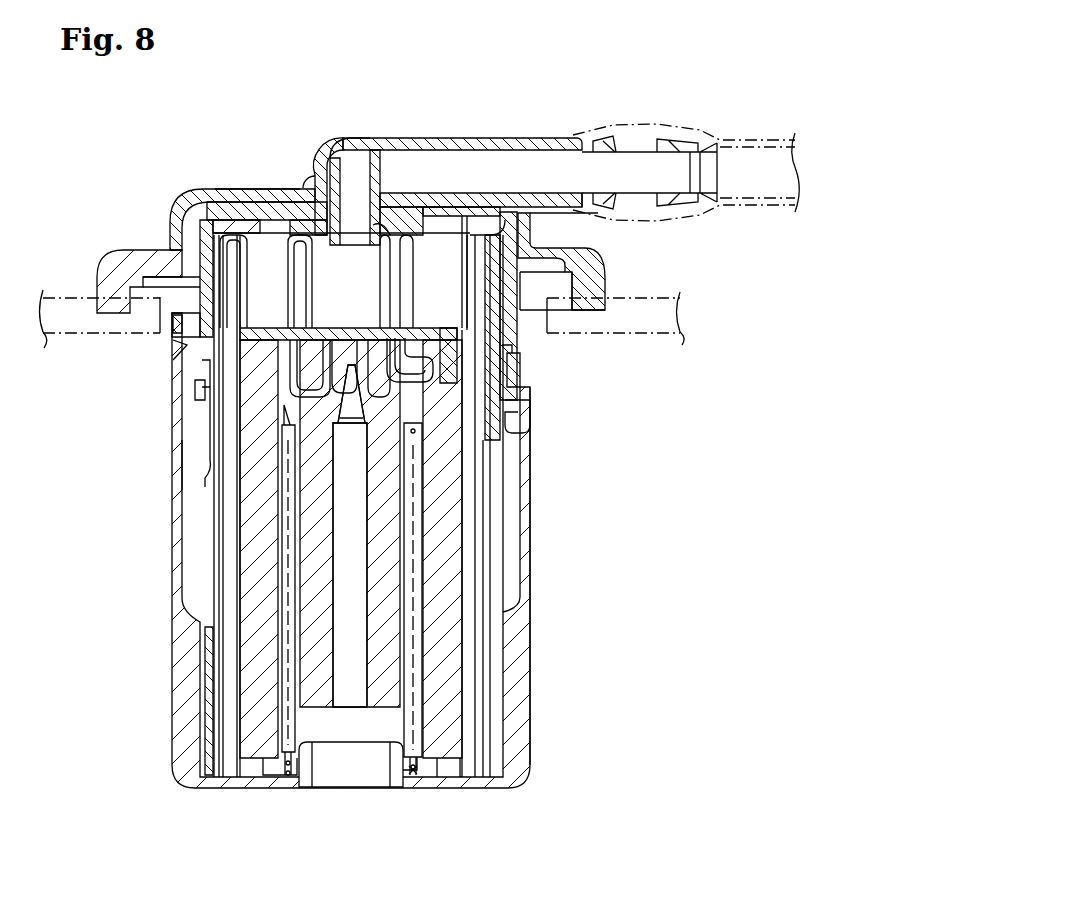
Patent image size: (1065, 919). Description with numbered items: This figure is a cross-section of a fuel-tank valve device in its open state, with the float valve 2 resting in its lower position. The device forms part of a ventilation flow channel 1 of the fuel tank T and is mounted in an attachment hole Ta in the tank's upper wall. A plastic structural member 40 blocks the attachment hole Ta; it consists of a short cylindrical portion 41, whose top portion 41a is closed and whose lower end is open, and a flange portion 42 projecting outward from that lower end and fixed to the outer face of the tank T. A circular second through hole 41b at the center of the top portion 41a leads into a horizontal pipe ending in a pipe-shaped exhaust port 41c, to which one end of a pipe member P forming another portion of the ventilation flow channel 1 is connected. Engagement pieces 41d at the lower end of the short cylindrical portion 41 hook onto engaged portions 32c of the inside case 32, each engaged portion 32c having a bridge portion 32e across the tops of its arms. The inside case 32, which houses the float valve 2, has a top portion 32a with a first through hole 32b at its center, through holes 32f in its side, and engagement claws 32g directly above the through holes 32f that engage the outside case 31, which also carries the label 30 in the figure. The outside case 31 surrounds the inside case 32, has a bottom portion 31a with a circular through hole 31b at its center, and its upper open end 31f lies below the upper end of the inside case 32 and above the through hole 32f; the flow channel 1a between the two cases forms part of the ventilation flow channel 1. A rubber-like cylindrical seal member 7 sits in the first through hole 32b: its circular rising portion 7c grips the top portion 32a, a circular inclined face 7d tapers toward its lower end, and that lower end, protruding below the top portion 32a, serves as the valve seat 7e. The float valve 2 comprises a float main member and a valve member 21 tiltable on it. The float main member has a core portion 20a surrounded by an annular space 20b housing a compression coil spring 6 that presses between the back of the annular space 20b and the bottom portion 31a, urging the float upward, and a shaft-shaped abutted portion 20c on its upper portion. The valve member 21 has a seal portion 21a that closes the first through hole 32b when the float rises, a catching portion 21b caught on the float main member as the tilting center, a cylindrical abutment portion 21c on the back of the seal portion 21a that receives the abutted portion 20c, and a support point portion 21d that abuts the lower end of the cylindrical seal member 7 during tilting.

The ventilation flow channel 1 is at (507, 173).
The flow channel 1a is at (195, 465).
The float valve 2 is at (452, 555).
The compression coil spring 6 is at (413, 673).
The cylindrical seal member 7 is at (355, 235).
The circular rising portion 7c is at (307, 197).
The circular inclined face 7d is at (397, 240).
The valve seat 7e is at (367, 230).
The core portion 20a is at (400, 602).
The annular space 20b is at (418, 647).
The abutted portion 20c is at (330, 370).
The valve member 21 is at (347, 327).
The seal portion 21a is at (343, 272).
The catching portion 21b is at (448, 327).
The abutment portion 21c is at (383, 385).
The support point portion 21d is at (300, 340).
The housing 30 is at (530, 533).
The outside case 31 is at (351, 511).
The bottom portion 31a is at (410, 788).
The circular through hole 31b is at (355, 762).
The upper open end 31f is at (195, 388).
The inside case 32 is at (207, 203).
The top portion 32a is at (247, 227).
The first through hole 32b is at (403, 207).
The engaged portion 32c is at (522, 375).
The bridge portion 32e is at (507, 349).
The through hole 32f is at (207, 475).
The engagement claw 32g is at (173, 340).
The structural member 40 is at (175, 203).
The short cylindrical portion 41 is at (175, 230).
The top portion 41a is at (270, 187).
The second through hole 41b is at (338, 240).
The exhaust port 41c is at (630, 168).
The engagement piece 41d is at (513, 413).
The flange portion 42 is at (593, 283).
The pipe member P is at (822, 186).
The fuel tank T is at (700, 324).
The attachment hole Ta is at (532, 325).